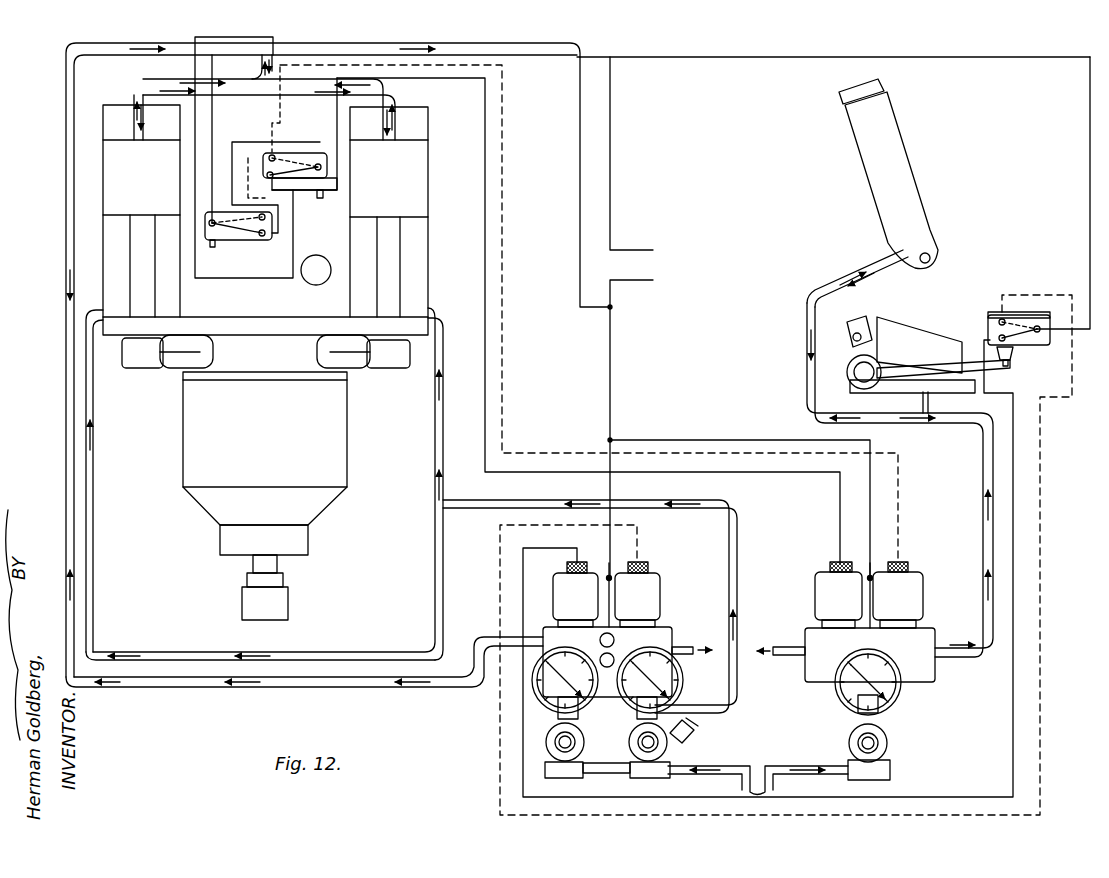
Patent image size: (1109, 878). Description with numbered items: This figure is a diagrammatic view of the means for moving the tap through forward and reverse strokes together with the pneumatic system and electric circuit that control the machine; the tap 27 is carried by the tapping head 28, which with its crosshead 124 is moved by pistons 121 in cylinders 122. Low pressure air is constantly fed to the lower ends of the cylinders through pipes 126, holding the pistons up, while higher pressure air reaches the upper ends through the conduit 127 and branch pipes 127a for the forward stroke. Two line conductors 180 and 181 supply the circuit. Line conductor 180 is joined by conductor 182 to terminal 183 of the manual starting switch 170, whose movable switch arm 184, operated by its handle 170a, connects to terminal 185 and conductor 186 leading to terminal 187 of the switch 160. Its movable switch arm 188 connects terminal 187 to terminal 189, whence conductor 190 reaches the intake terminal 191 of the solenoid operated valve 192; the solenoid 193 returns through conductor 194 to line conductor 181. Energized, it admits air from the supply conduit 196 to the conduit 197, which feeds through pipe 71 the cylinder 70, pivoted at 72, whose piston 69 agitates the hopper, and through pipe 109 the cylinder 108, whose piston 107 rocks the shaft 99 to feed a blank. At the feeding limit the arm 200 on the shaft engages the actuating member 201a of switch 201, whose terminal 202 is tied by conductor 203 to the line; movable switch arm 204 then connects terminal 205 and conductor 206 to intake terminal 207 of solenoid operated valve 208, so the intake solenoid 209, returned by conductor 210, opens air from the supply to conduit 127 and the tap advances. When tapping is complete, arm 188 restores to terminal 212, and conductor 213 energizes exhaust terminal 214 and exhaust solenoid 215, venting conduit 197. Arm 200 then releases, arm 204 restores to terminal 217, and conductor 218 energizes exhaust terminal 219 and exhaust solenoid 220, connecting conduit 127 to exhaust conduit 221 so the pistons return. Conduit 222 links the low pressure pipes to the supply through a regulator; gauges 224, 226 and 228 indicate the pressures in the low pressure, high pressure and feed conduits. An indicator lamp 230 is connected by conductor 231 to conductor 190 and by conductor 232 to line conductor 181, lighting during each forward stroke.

The nozzle 27 is at (272, 603).
The tapping head 28 is at (320, 452).
The piston 69 is at (873, 90).
The cylinder 70 is at (910, 184).
The pipe 71 is at (836, 303).
The pivot 72 is at (930, 255).
The shaft 99 is at (853, 372).
The piston 107 is at (862, 318).
The cylinder 108 is at (920, 342).
The pipe 109 is at (932, 406).
The pistons 121 is at (160, 190).
The cylinders 122 is at (414, 261).
The crosshead 124 is at (340, 373).
The pipes 126 is at (94, 416).
The pipes 127 is at (445, 693).
The branch pipes 127a is at (252, 90).
The switch 160 is at (306, 178).
The manual starting switch 170 is at (240, 245).
The switch arm contact 170a is at (213, 250).
The line conductor 180 is at (641, 250).
The line conductor 181 is at (640, 280).
The conductor 182 is at (545, 60).
The terminal 183 is at (216, 241).
The movable switch arm 184 is at (244, 240).
The terminal 185 is at (266, 218).
The conductor 186 is at (325, 136).
The terminal 187 is at (322, 167).
The movable switch arm 188 is at (324, 173).
The terminal 189 is at (267, 174).
The conductor 190 is at (454, 78).
The intake terminal 191 is at (797, 541).
The solenoid operated valve 192 is at (925, 567).
The solenoid 193 is at (828, 592).
The conductor 194 is at (717, 440).
The supply conduit 196 is at (780, 766).
The conduit 197 is at (983, 659).
The arm 200 is at (988, 326).
The switch 201 is at (1028, 350).
The actuating member 201a is at (1010, 365).
The terminal 202 is at (1038, 331).
The conductor 203 is at (1090, 184).
The movable switch arm 204 is at (1037, 327).
The switch terminal 205 is at (991, 323).
The conductor 206 is at (522, 713).
The intake terminal 207 is at (577, 562).
The solenoid operated valve 208 is at (552, 582).
The intake solenoid 209 is at (560, 603).
The conductor 210 is at (611, 492).
The terminal 212 is at (275, 158).
The conductor 213 is at (505, 189).
The exhaust terminal 214 is at (900, 560).
The exhaust solenoid 215 is at (905, 600).
The terminal 217 is at (1004, 320).
The conductor 218 is at (1041, 515).
The exhaust terminal 219 is at (642, 562).
The exhaust solenoid 220 is at (650, 588).
The conduit 221 is at (688, 645).
The conduit 222 is at (740, 700).
The gauge 224 is at (682, 682).
The gauge 226 is at (588, 698).
The gauge 228 is at (899, 694).
The indicator lamp 230 is at (334, 292).
The conductor 231 is at (294, 243).
The conductor 232 is at (280, 275).